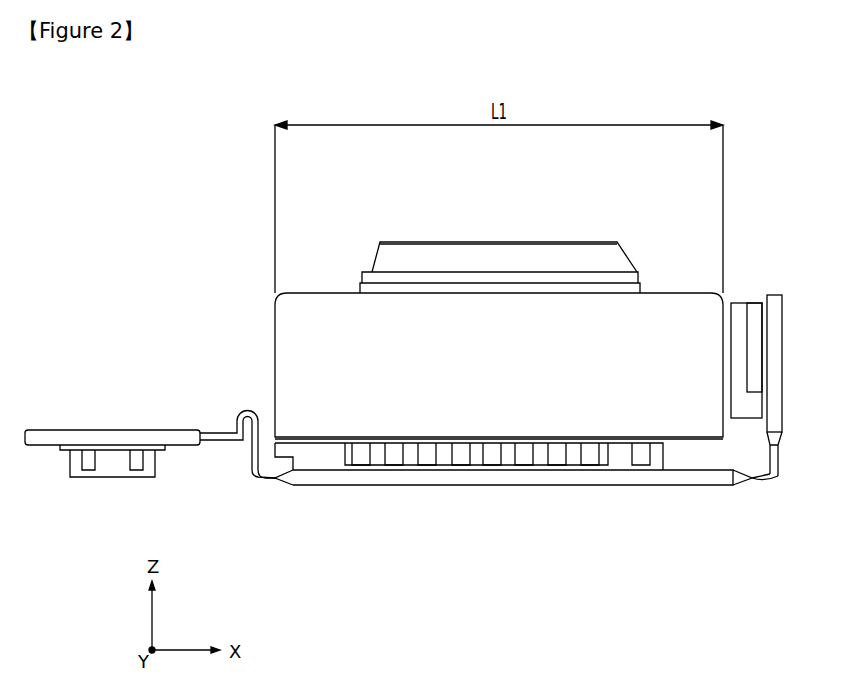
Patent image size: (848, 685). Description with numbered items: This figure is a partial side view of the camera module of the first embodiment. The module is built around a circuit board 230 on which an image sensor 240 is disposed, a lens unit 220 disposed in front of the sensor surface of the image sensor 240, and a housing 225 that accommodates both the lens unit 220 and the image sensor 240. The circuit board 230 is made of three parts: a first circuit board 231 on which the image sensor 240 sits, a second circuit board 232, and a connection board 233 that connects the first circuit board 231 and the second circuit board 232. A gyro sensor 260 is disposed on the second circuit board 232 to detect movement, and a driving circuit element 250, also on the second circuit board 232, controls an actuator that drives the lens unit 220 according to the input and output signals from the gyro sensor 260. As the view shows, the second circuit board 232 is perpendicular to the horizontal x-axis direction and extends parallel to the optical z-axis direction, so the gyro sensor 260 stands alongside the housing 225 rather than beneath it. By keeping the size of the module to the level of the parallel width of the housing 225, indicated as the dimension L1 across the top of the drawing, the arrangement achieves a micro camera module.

The lens unit 220 is at (455, 255).
The housing 225 is at (294, 340).
The circuit board 230 is at (554, 453).
The first circuit board 231 is at (688, 482).
The second circuit board 232 is at (777, 405).
The connection board 233 is at (773, 482).
The image sensor 240 is at (475, 457).
The driving circuit element 250 is at (757, 363).
The gyro sensor 260 is at (740, 331).